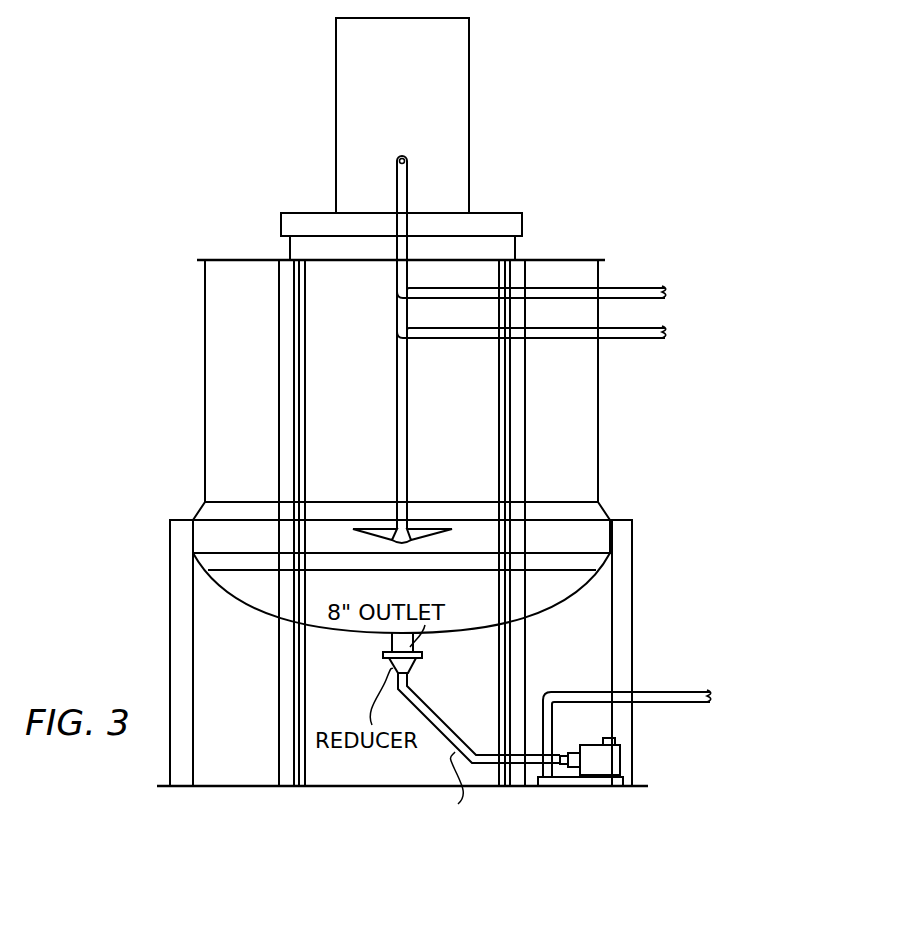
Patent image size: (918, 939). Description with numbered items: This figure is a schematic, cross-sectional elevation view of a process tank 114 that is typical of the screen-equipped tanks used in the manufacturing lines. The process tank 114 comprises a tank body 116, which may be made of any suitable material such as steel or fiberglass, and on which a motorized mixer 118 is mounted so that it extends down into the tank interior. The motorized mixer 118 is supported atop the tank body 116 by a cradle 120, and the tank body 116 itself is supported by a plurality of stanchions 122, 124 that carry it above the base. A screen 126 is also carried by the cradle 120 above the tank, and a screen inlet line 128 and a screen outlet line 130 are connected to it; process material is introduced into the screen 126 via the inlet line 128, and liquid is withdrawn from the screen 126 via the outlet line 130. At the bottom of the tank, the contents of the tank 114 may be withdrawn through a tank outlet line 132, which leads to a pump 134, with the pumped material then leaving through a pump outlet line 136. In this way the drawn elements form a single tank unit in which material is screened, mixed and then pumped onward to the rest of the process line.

The process tank 114 is at (188, 441).
The tank body 116 is at (205, 335).
The motorized mixer 118 is at (397, 462).
The cradle 120 is at (278, 247).
The stanchion 122 is at (294, 407).
The stanchion 124 is at (170, 620).
The screen 126 is at (469, 121).
The screen inlet line 128 is at (613, 288).
The screen outlet line 130 is at (647, 329).
The tank outlet line 132 is at (440, 723).
The pump 134 is at (623, 757).
The pump outlet line 136 is at (677, 703).